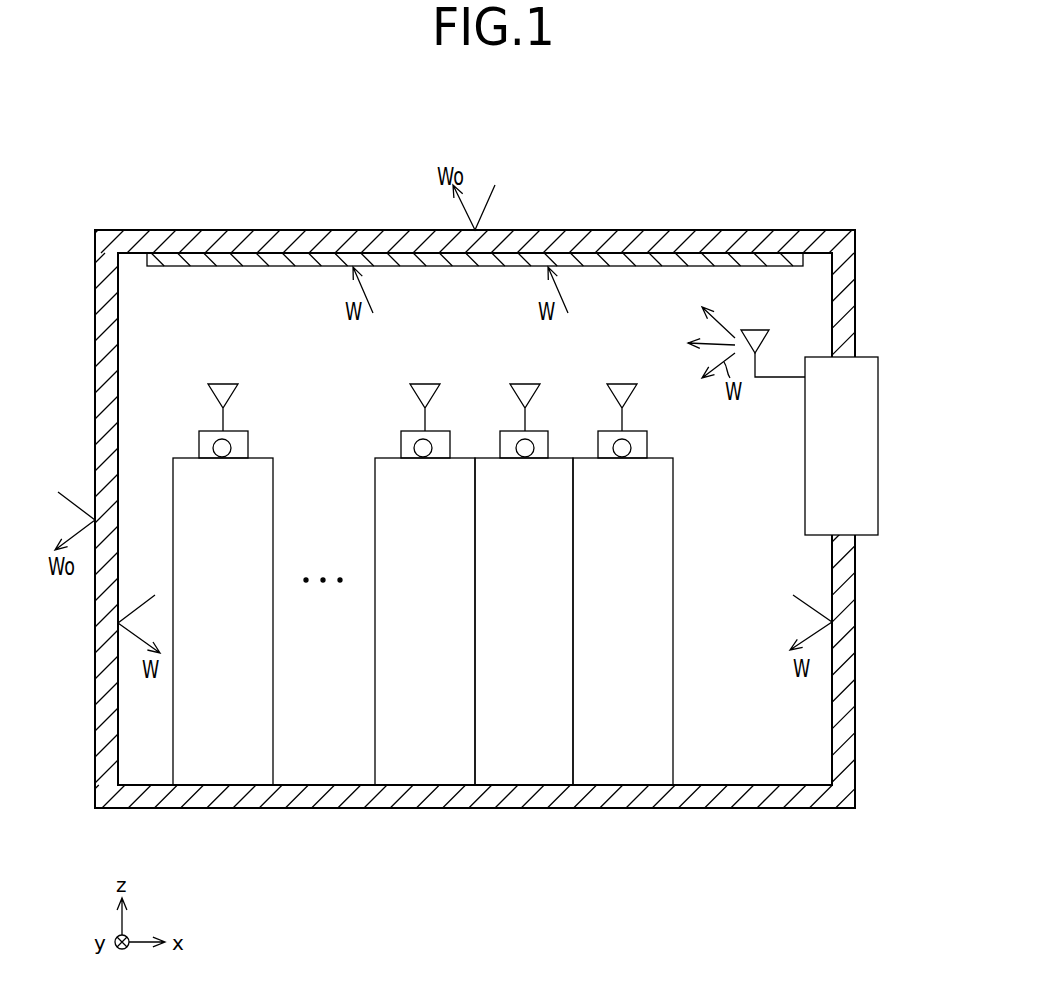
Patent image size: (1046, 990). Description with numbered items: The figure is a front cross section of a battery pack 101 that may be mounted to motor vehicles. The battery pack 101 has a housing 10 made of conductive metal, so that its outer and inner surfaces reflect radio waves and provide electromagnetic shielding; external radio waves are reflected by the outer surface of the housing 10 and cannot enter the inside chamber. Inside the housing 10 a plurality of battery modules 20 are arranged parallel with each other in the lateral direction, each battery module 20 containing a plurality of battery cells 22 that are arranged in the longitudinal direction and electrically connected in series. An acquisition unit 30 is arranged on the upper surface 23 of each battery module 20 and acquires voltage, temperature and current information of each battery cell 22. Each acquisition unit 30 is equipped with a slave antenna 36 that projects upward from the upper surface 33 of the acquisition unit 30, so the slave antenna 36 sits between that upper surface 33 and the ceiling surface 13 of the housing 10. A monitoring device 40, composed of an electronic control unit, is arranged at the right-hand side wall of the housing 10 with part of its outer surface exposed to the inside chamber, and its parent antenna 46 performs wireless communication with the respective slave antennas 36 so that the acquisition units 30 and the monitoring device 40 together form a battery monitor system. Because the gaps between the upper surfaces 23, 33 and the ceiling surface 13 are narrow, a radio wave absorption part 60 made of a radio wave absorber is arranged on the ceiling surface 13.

The battery pack 101 is at (803, 145).
The housing 10 is at (846, 283).
The ceiling surface 13 is at (265, 262).
The radio wave absorption part 60 is at (498, 258).
The monitoring device 40 is at (862, 462).
The parent antenna 46 is at (755, 331).
The battery module 20 is at (225, 763).
The battery cell 22 is at (268, 689).
The acquisition unit 30 is at (419, 455).
The upper surface of the acquisition unit 33 is at (200, 432).
The upper surface of the battery module 23 is at (228, 458).
The slave antenna 36 is at (217, 392).